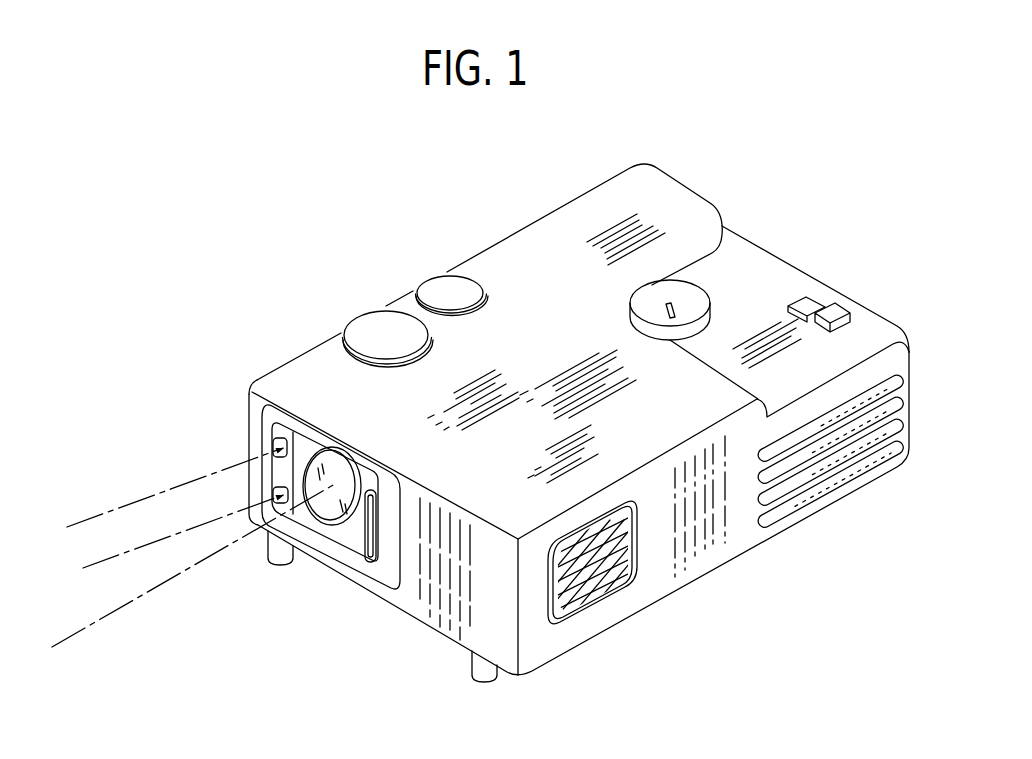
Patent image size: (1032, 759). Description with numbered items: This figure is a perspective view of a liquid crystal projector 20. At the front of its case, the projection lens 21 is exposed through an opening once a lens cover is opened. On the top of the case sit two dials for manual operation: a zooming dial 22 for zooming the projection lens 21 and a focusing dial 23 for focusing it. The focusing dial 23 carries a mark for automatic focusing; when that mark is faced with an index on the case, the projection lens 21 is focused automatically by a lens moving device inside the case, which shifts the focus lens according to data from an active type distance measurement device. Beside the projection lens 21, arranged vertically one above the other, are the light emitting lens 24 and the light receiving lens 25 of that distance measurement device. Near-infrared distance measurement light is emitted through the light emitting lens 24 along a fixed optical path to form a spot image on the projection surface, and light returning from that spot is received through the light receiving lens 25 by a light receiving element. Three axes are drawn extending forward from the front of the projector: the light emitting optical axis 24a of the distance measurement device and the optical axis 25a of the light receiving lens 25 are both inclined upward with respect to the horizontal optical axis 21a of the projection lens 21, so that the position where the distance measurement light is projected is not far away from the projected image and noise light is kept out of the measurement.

The liquid crystal projector 20 is at (537, 218).
The projection lens 21 is at (333, 463).
The zooming dial 22 is at (438, 276).
The focusing dial 23 is at (365, 312).
The light emitting lens 24 is at (274, 442).
The light receiving lens 25 is at (273, 494).
The light emitting optical axis 24a is at (118, 507).
The optical axis of the light receiving lens 25a is at (173, 535).
The horizontal optical axis of the projection lens 21a is at (112, 613).